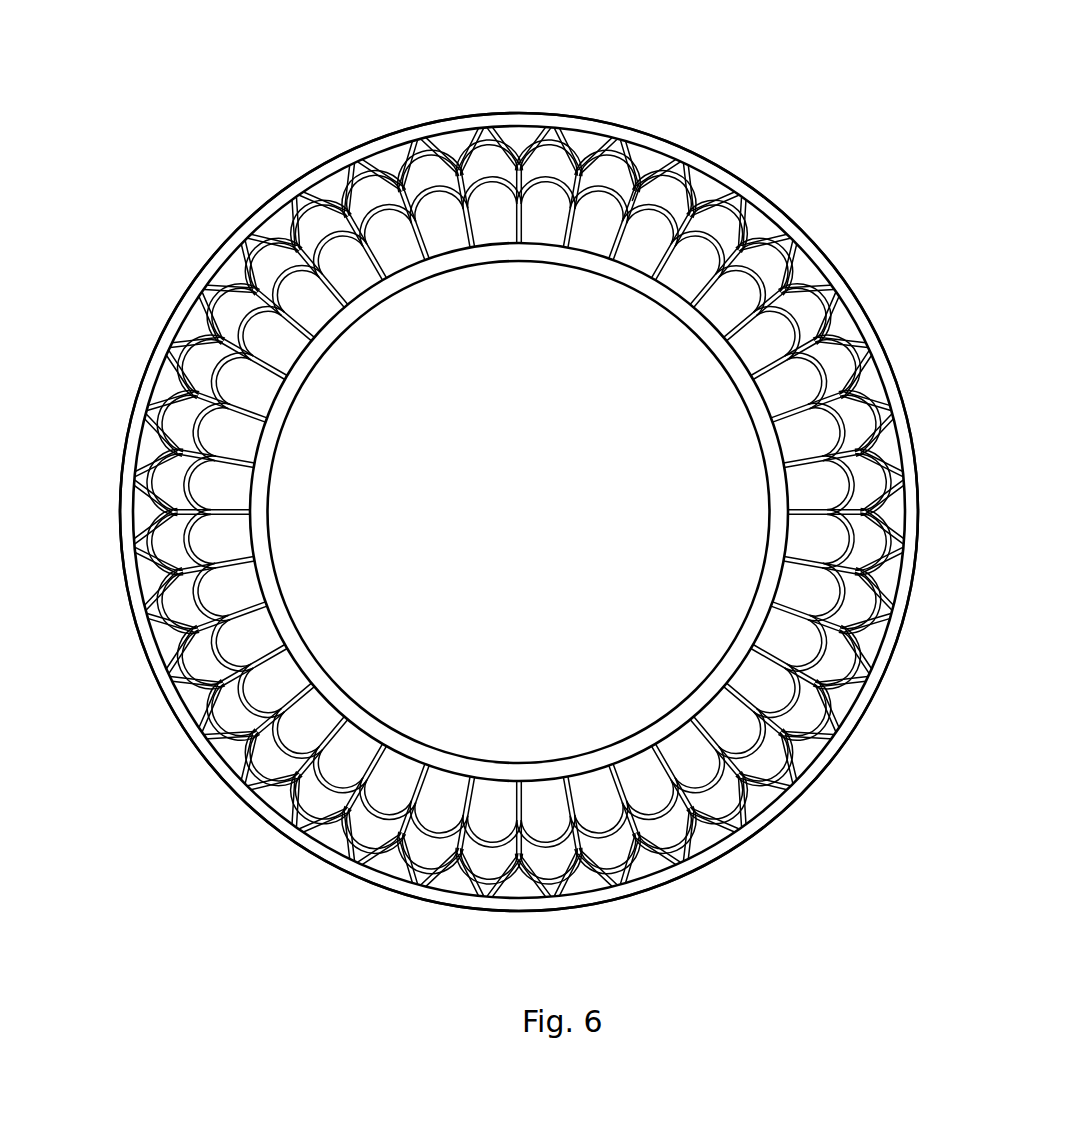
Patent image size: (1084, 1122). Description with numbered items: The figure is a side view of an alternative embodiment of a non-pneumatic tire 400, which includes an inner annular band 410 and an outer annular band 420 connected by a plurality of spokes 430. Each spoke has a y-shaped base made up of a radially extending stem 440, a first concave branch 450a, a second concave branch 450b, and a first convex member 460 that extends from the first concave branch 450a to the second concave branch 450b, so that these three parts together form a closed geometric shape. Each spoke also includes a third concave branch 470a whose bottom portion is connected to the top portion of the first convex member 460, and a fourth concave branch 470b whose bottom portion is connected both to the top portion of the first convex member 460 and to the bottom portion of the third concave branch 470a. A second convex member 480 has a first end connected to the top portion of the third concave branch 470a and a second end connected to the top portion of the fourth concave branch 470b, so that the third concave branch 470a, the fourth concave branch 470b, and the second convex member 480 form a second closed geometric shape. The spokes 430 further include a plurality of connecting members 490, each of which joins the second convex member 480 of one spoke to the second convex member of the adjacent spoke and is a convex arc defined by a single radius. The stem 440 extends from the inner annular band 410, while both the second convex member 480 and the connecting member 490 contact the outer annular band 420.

The non-pneumatic tire 400 is at (907, 90).
The inner annular band 410 is at (255, 483).
The outer annular band 420 is at (320, 168).
The spokes 430 is at (190, 348).
The radially extending stem 440 is at (617, 242).
The first concave branch 450a is at (613, 202).
The second concave branch 450b is at (640, 212).
The first convex member 460 is at (653, 193).
The third concave branch 470a is at (625, 167).
The fourth concave branch 470b is at (657, 173).
The second convex member 480 is at (645, 147).
The connecting members 490 is at (862, 345).